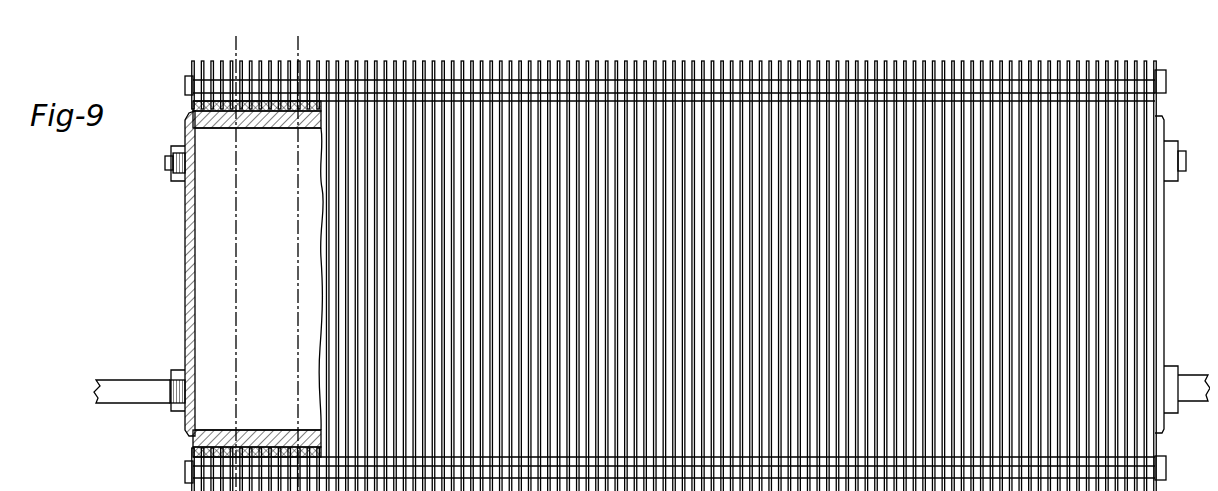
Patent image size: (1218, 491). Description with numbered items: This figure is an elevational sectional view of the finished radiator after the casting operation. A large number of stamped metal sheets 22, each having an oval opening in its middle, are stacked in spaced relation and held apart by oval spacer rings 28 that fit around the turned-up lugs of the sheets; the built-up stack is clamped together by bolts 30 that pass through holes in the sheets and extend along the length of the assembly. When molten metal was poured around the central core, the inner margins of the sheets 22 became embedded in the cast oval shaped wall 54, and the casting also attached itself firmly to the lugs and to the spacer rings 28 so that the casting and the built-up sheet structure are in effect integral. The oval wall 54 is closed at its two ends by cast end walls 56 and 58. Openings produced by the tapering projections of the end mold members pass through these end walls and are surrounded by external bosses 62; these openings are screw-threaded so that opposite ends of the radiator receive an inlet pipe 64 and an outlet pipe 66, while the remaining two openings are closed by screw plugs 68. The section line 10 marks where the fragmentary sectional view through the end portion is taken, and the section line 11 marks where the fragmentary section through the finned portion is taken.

The section line 10— 10 is at (235, 33).
The section line 11 is at (276, 33).
The metal sheet 22 is at (600, 54).
The spacer ring 28 is at (258, 120).
The bolt 30 is at (176, 78).
The cast oval shaped wall 54 is at (212, 122).
The cast end wall 56 is at (178, 247).
The cast end wall 58 is at (1157, 295).
The external boss 62 is at (166, 176).
The inlet pipe 64 is at (107, 388).
The outlet pipe 66 is at (1178, 388).
The screw plug 68 is at (157, 157).